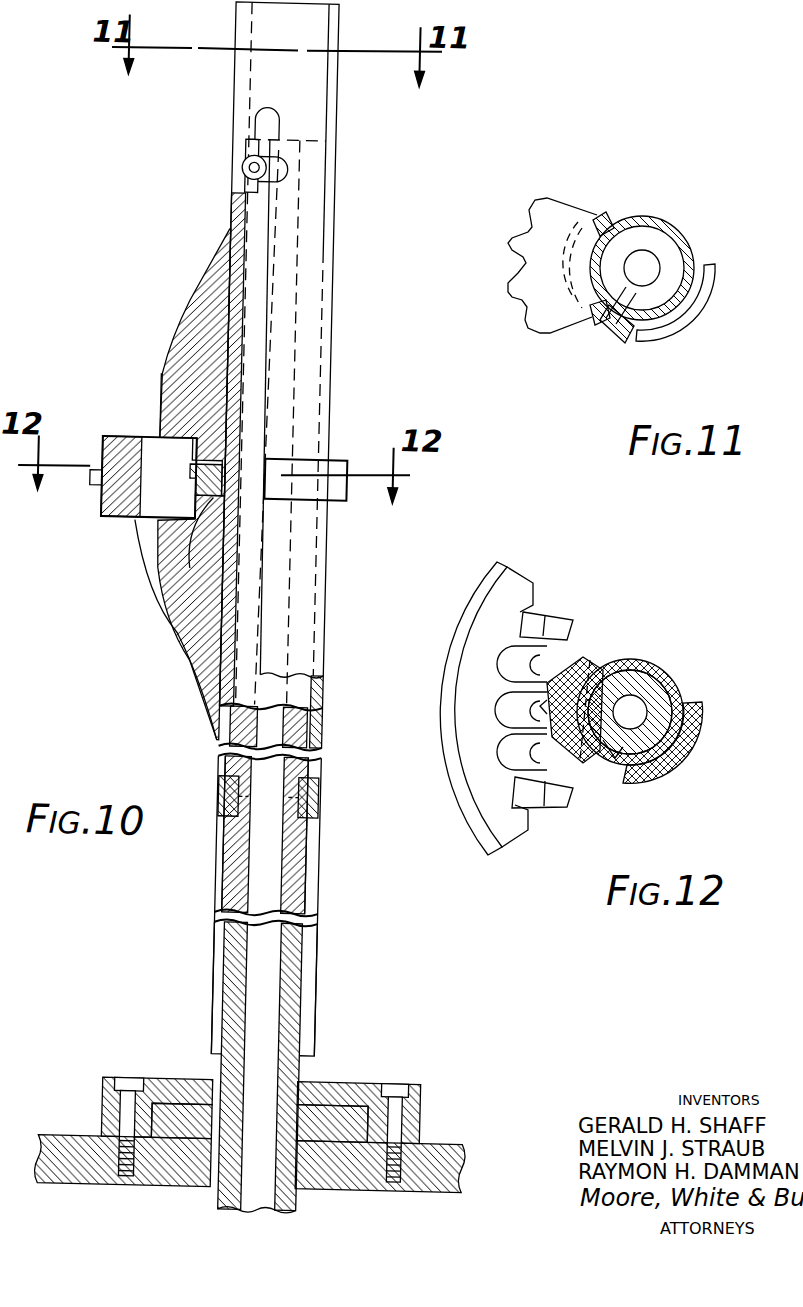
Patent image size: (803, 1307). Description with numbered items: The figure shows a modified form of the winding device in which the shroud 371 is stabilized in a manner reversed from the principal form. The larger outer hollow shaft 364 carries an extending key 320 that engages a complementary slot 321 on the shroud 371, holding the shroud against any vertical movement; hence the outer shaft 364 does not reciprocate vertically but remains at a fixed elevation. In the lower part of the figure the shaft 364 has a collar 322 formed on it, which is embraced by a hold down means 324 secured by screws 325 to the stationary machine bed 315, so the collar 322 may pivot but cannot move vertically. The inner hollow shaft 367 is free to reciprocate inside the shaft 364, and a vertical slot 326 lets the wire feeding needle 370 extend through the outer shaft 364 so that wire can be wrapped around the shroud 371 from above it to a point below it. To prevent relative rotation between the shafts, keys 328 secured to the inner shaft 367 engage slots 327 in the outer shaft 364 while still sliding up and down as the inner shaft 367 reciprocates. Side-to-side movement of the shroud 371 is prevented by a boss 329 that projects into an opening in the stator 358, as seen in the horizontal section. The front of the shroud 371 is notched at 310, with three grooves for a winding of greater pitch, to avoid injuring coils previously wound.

In FIG. 10, the notch 310 is at (168, 403).
In FIG. 11, the notch 310 is at (512, 258).
In FIG. 12, the notch 310 is at (515, 700).
In FIG. 10, the machine bed 315 is at (470, 1182).
In FIG. 10, the key 320 is at (357, 466).
In FIG. 11, the key 320 is at (712, 292).
In FIG. 12, the key 320 is at (692, 752).
In FIG. 10, the slot 321 is at (176, 591).
In FIG. 10, the collar 322 is at (367, 1114).
In FIG. 10, the hold down means 324 is at (397, 1080).
In FIG. 10, the screws 325 is at (422, 1109).
In FIG. 10, the slot 326 is at (255, 128).
In FIG. 12, the slot 326 is at (617, 757).
In FIG. 10, the slots 327 is at (332, 859).
In FIG. 10, the keys 328 is at (328, 805).
In FIG. 10, the boss 329 is at (202, 483).
In FIG. 12, the boss 329 is at (548, 707).
In FIG. 10, the stator 358 is at (118, 514).
In FIG. 12, the stator 358 is at (483, 604).
In FIG. 10, the outer hollow shaft 364 is at (340, 128).
In FIG. 11, the outer hollow shaft 364 is at (685, 240).
In FIG. 12, the outer hollow shaft 364 is at (654, 669).
In FIG. 10, the inner hollow shaft 367 is at (321, 944).
In FIG. 11, the inner hollow shaft 367 is at (668, 290).
In FIG. 12, the inner hollow shaft 367 is at (660, 688).
In FIG. 10, the wire feeding needle 370 is at (246, 170).
In FIG. 11, the wire feeding needle 370 is at (617, 343).
In FIG. 10, the shroud 371 is at (189, 328).
In FIG. 11, the shroud 371 is at (553, 222).
In FIG. 12, the shroud 371 is at (567, 660).